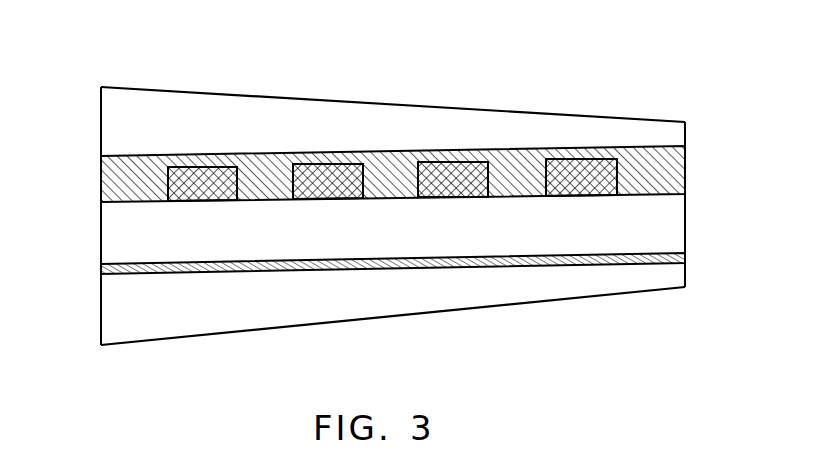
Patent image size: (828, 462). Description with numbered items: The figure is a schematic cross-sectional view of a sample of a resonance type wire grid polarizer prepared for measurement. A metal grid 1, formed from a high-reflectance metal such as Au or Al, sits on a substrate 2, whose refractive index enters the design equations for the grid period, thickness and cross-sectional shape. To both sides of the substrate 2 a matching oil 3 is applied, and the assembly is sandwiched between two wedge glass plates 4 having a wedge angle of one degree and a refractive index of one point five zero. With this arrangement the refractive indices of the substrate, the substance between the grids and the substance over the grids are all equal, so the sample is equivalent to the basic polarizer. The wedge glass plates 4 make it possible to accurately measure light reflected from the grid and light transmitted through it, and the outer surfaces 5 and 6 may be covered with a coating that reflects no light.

The metal grid 1 is at (572, 158).
The substrate 2 is at (688, 212).
The matching oil 3 is at (100, 180).
The wedge glass plates 4 is at (100, 123).
The surface 5 is at (262, 96).
The surface 6 is at (253, 329).